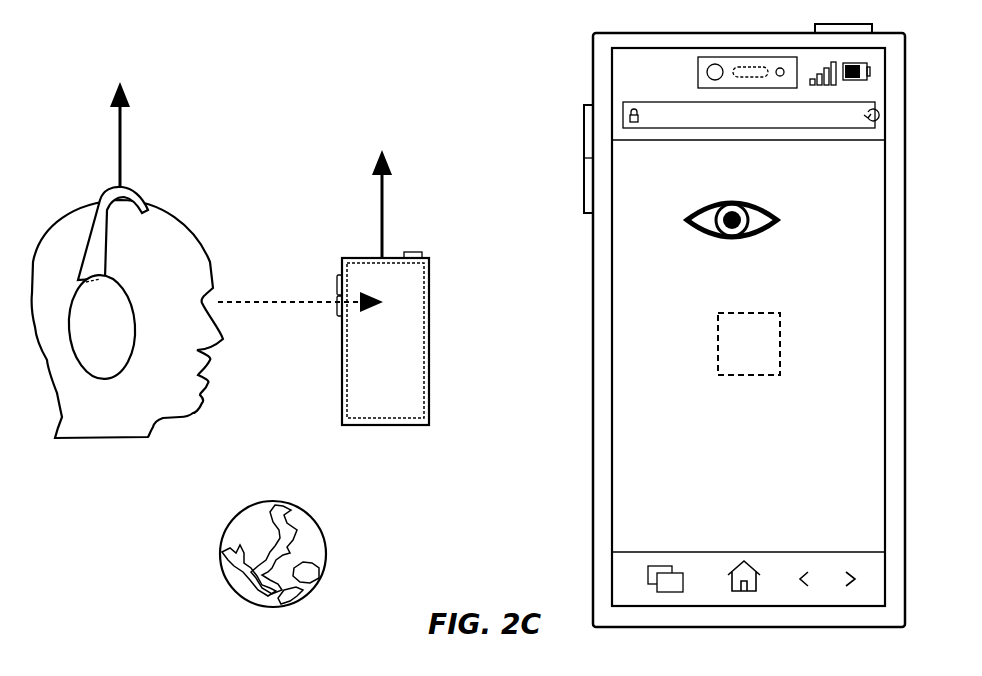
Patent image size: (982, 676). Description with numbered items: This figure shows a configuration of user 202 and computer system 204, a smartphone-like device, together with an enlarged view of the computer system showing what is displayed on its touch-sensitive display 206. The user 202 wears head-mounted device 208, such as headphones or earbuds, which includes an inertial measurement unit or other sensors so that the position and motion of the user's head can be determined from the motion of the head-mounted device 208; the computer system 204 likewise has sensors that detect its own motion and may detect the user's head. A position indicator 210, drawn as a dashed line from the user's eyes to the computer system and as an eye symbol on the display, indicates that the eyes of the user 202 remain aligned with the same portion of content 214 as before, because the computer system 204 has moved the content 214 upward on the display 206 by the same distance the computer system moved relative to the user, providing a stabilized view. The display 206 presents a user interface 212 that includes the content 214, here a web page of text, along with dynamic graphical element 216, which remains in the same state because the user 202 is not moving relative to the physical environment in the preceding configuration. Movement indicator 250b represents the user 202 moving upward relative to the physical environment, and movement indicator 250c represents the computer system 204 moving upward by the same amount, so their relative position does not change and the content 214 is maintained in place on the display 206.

The user 202 is at (188, 208).
The computer system 204 is at (387, 300).
The touch-sensitive display 206 is at (365, 263).
The head-mounted device 208 is at (108, 187).
The position indicator 210 is at (282, 300).
The user interface 212 is at (765, 322).
The content 214 is at (847, 331).
The dynamic graphical element 216 is at (767, 378).
The movement indicator 250b is at (121, 124).
The movement indicator 250c is at (378, 183).